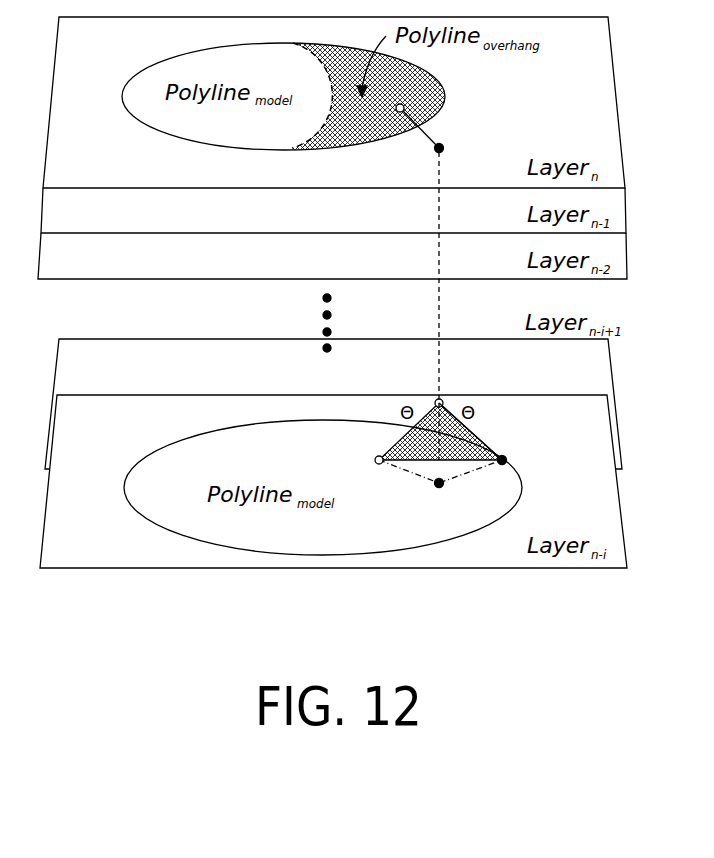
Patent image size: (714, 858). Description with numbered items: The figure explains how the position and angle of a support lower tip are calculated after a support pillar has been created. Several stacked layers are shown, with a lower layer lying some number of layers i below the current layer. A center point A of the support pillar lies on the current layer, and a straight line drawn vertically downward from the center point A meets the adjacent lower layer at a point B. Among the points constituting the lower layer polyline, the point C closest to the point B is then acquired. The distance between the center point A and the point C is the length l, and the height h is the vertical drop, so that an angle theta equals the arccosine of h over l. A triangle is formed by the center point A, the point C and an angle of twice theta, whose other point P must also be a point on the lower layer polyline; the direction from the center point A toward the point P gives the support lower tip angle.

The center point A is at (447, 388).
The point on adjacent lower layer B is at (427, 490).
The closest point C is at (516, 461).
The other point of triangle P is at (370, 456).
The height h is at (449, 431).
The distance l is at (470, 431).
The layer count i is at (337, 323).